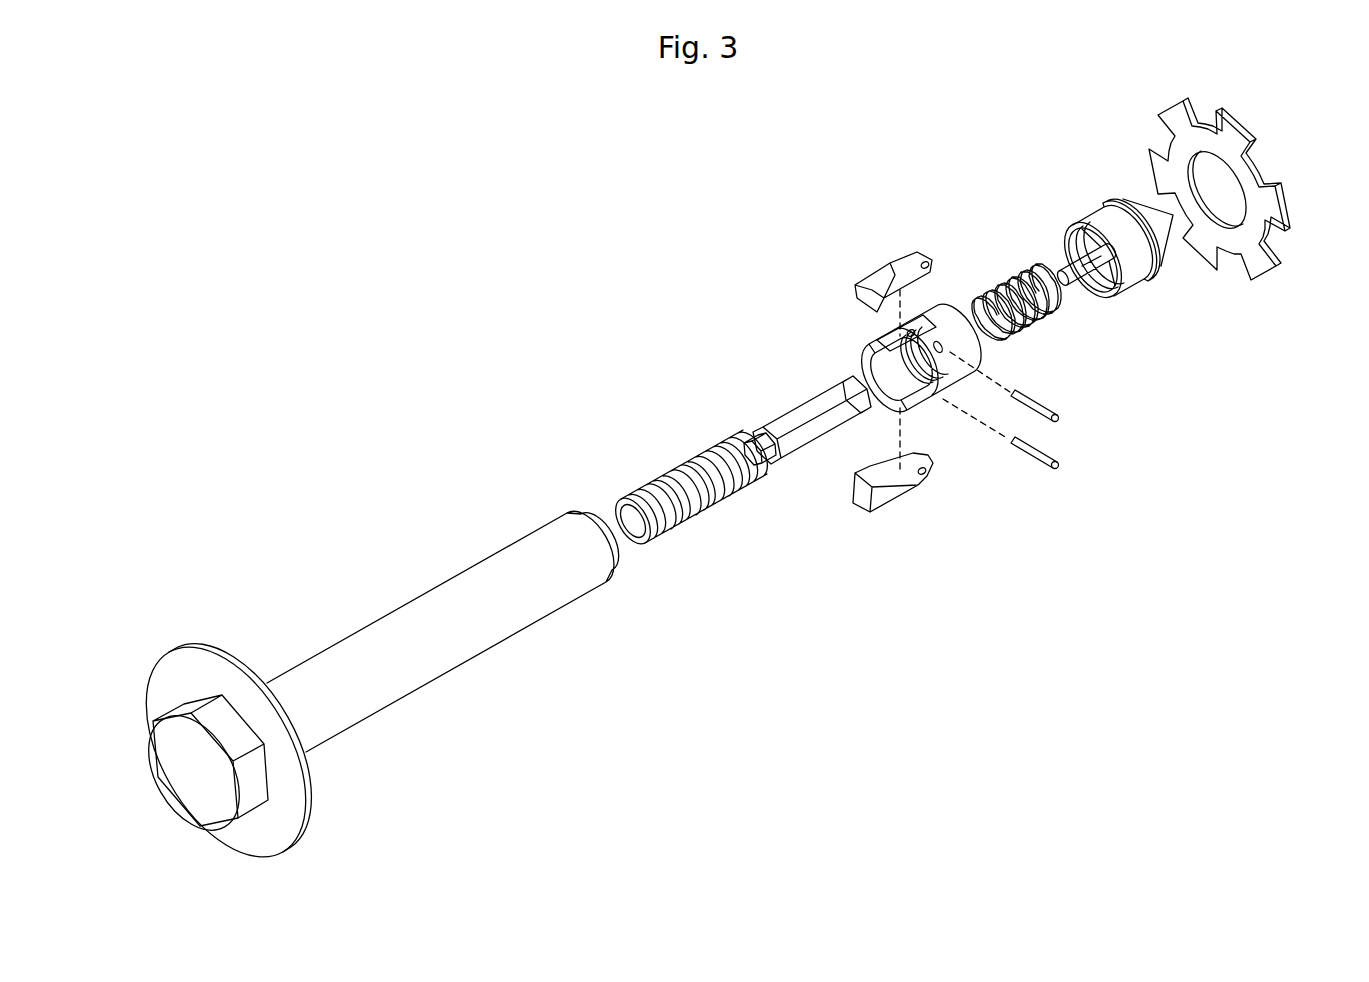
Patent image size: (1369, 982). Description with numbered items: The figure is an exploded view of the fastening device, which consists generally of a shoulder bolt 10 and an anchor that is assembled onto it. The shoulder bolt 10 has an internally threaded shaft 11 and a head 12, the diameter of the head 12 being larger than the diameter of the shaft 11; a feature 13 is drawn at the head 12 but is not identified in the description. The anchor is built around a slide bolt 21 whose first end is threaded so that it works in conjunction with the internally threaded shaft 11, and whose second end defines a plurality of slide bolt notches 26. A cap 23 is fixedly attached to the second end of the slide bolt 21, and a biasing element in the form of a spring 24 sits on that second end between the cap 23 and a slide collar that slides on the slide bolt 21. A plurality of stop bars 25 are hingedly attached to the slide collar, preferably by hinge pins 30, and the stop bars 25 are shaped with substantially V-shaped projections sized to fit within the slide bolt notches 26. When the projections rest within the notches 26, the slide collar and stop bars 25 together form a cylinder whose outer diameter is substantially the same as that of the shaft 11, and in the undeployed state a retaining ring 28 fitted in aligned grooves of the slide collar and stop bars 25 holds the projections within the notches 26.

The shoulder bolt 10 is at (340, 553).
The internally threaded shaft 11 is at (418, 660).
The head 12 is at (176, 768).
The flange 13 is at (305, 817).
The slide bolt 21 is at (802, 440).
The cap 23 is at (1137, 268).
The spring 24 is at (1040, 322).
The stop bars 25 is at (903, 255).
The slide bolt notches 26 is at (762, 427).
The retaining ring 28 is at (1178, 152).
The hinge pins 30 is at (1056, 467).